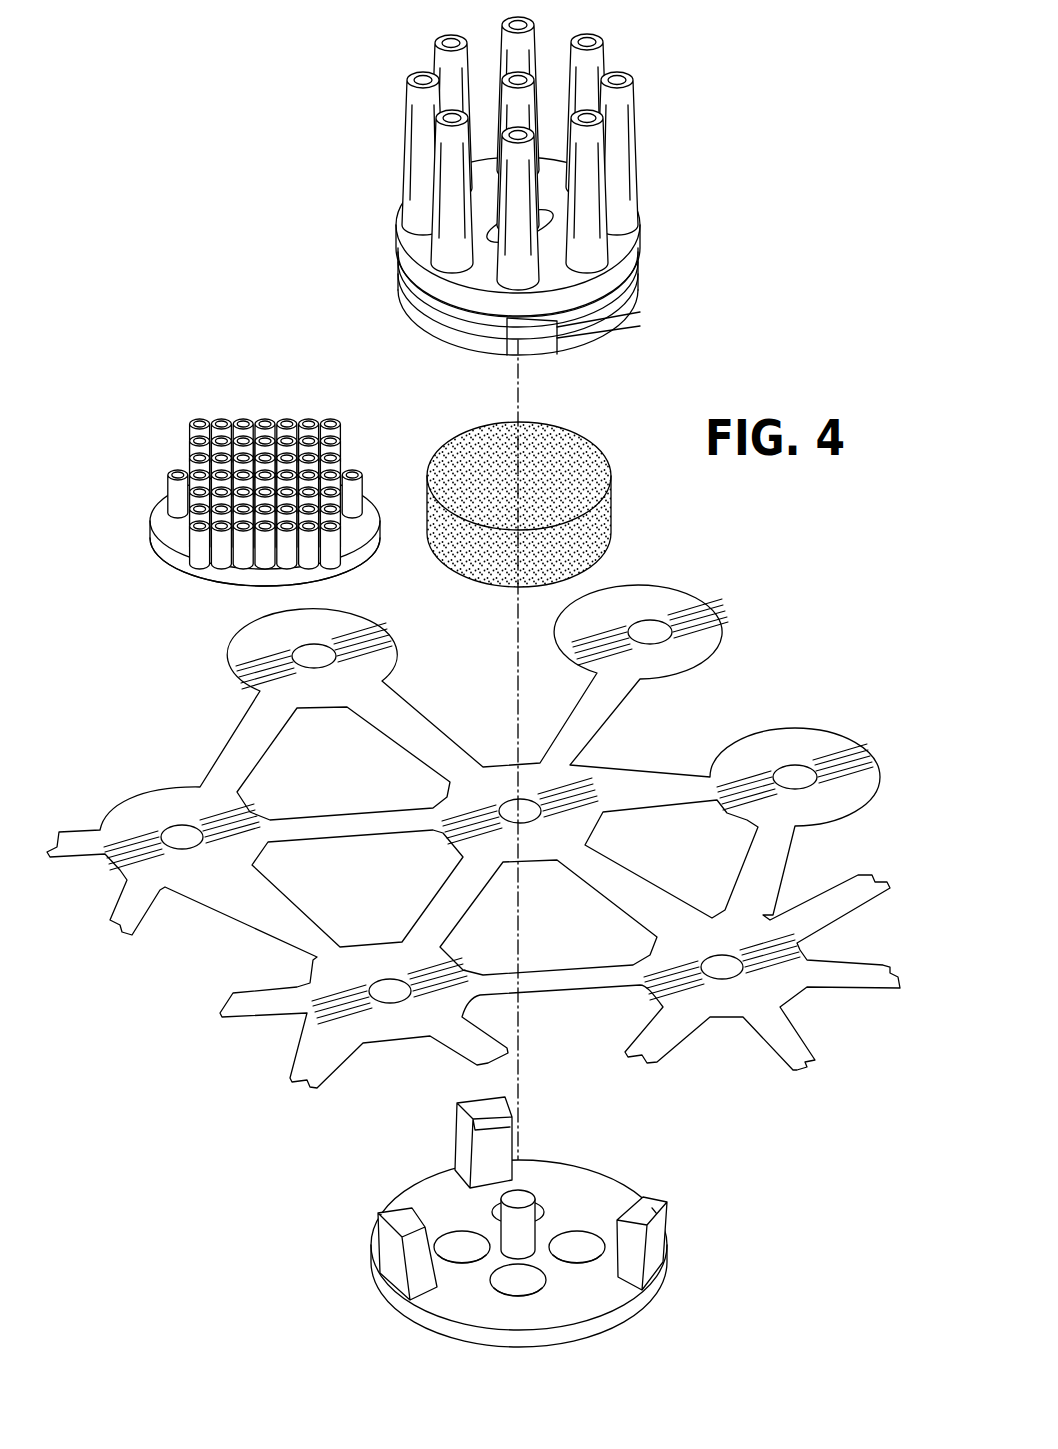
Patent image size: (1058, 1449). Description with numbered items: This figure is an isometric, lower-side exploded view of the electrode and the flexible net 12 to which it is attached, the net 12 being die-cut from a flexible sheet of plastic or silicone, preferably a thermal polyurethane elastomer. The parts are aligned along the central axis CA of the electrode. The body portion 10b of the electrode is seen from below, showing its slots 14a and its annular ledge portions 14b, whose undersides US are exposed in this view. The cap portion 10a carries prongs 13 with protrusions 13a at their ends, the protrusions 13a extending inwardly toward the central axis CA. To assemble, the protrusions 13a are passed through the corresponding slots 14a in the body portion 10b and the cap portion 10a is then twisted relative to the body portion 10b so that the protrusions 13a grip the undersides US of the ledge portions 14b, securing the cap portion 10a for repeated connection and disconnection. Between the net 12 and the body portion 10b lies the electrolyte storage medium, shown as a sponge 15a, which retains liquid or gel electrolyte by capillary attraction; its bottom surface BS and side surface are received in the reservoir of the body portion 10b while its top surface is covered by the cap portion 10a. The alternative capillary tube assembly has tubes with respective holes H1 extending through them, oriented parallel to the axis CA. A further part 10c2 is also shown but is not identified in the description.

The cap portion 10a is at (495, 1222).
The body portion 10b is at (378, 257).
The pin array insert 10c2 is at (224, 484).
The flexible net 12 is at (217, 738).
The prongs 13 is at (660, 1249).
The protrusions 13a is at (486, 1125).
The slots 14a is at (539, 340).
The annular ledge portions 14b is at (597, 328).
The sponge 15a is at (634, 515).
The bottom surface BS is at (205, 412).
The undersides US is at (614, 300).
The holes H1 is at (262, 410).
The central axis CA is at (517, 668).